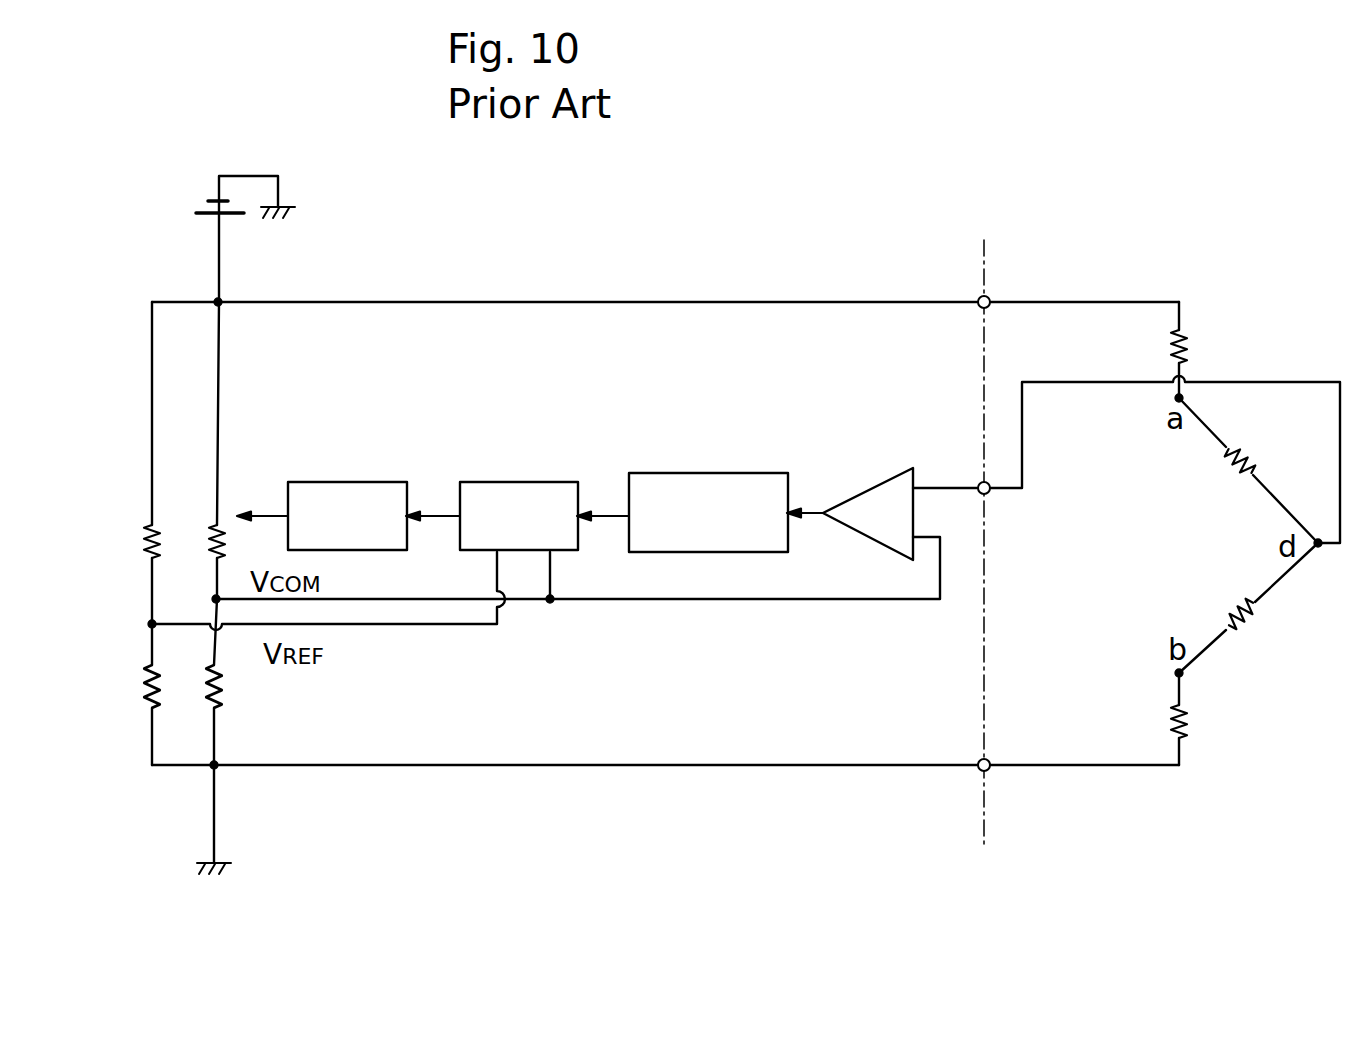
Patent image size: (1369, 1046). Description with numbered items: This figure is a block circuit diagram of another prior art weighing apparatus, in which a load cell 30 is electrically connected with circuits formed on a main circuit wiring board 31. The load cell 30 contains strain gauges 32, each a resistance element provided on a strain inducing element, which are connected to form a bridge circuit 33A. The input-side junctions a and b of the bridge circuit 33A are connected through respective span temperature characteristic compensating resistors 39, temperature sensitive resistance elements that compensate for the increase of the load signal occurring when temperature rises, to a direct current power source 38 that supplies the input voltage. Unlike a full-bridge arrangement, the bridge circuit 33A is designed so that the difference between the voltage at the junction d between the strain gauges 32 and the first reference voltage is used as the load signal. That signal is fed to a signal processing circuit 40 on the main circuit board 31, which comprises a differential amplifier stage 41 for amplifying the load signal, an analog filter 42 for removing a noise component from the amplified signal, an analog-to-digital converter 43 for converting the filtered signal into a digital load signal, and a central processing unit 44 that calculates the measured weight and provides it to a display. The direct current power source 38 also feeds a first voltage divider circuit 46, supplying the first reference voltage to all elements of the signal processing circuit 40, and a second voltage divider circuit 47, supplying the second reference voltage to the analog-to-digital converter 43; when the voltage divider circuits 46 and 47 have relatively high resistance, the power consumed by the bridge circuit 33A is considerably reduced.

The direct current power source 38 is at (197, 207).
The second voltage divider circuit 47 is at (129, 531).
The first voltage divider circuit 46 is at (199, 523).
The central processing unit 44 is at (343, 480).
The analog-to-digital converter 43 is at (517, 480).
The analog filter 42 is at (697, 472).
The differential amplifier stage 41 is at (850, 497).
The signal processing circuit 40 is at (885, 402).
The span temperature characteristic compensating resistor 39 is at (1192, 342).
The bridge circuit 33A is at (1252, 418).
The strain gauge 32 is at (1255, 454).
The main circuit wiring board 31 is at (960, 820).
The load cell 30 is at (995, 820).